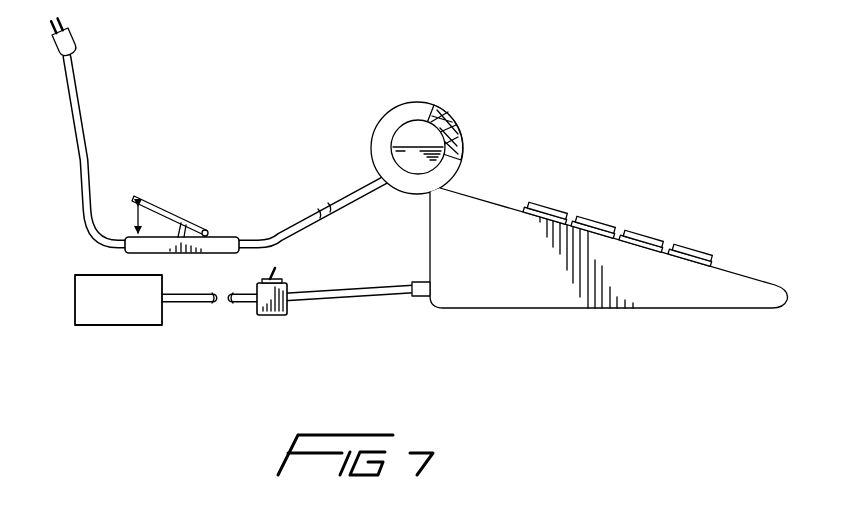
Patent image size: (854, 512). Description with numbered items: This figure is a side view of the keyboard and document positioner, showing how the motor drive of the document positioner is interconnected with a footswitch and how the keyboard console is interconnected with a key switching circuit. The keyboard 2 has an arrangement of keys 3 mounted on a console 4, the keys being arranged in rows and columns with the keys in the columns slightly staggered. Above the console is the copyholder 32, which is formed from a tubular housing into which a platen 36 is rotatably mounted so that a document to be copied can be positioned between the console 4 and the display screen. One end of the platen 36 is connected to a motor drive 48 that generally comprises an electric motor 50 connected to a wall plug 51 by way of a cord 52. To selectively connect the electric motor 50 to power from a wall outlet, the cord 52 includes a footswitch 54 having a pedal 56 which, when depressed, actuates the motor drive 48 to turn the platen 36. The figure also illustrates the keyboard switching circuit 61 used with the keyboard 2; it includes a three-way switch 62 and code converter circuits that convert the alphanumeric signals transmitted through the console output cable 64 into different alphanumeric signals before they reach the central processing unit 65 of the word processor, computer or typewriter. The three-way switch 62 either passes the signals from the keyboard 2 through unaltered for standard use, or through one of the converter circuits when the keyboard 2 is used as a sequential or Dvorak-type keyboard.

The keyboard 2 is at (609, 226).
The keys 3 is at (675, 243).
The console 4 is at (543, 279).
The copyholder 32 is at (417, 119).
The platen 36 is at (452, 127).
The motor drive 48 is at (392, 132).
The electric motor 50 is at (460, 148).
The wall plug 51 is at (72, 45).
The cord 52 is at (357, 195).
The footswitch 54 is at (226, 240).
The pedal 56 is at (167, 212).
The keyboard switching circuit 61 is at (265, 315).
The three-way switch 62 is at (276, 266).
The console output cable 64 is at (388, 293).
The central processing unit 65 is at (103, 325).